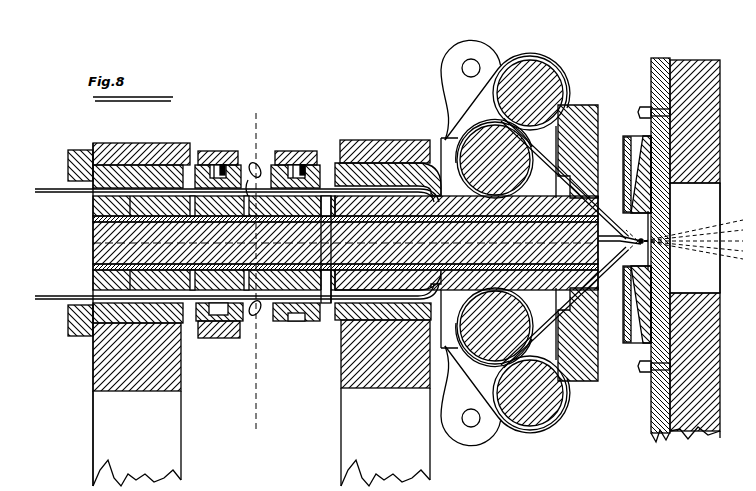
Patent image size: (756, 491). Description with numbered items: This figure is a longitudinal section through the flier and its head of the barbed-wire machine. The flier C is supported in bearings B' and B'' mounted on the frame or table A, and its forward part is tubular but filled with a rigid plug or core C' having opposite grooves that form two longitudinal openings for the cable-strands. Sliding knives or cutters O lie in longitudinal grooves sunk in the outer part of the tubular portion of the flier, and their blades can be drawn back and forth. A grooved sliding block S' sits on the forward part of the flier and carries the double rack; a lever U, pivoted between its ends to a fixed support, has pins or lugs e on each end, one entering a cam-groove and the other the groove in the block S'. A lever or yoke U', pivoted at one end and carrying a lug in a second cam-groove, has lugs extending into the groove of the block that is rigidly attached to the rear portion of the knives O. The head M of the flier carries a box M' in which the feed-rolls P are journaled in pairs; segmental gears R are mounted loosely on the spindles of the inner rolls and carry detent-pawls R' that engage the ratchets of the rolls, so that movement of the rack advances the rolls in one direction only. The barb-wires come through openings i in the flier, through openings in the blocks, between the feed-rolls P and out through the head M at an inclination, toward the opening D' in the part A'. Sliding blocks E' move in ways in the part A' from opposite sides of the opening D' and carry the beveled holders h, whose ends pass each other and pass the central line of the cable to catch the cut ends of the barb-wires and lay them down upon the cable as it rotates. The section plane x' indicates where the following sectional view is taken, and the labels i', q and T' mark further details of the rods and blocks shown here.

The bearing B' is at (129, 230).
The frame or table A is at (261, 403).
The upper rod i' is at (237, 204).
The openings in the flier i is at (300, 246).
The flier C is at (334, 314).
The lever or yoke U' is at (219, 246).
The key q is at (213, 157).
The lever U is at (295, 162).
The pins or lugs e is at (293, 157).
The grooved sliding block S' is at (302, 231).
The loop T' is at (248, 235).
The sliding knives or cutters O is at (401, 243).
The section line x' x' is at (253, 270).
The bearing B'' is at (388, 219).
The feed-rolls P is at (530, 50).
The box M' is at (507, 243).
The segmental gears R is at (471, 242).
The detent-pawls R' is at (469, 241).
The head M is at (588, 244).
The rigid plug or core C' is at (619, 243).
The sliding blocks E' is at (650, 250).
The part of the frame A' is at (707, 249).
The opening D' is at (695, 238).
The holders h is at (637, 239).